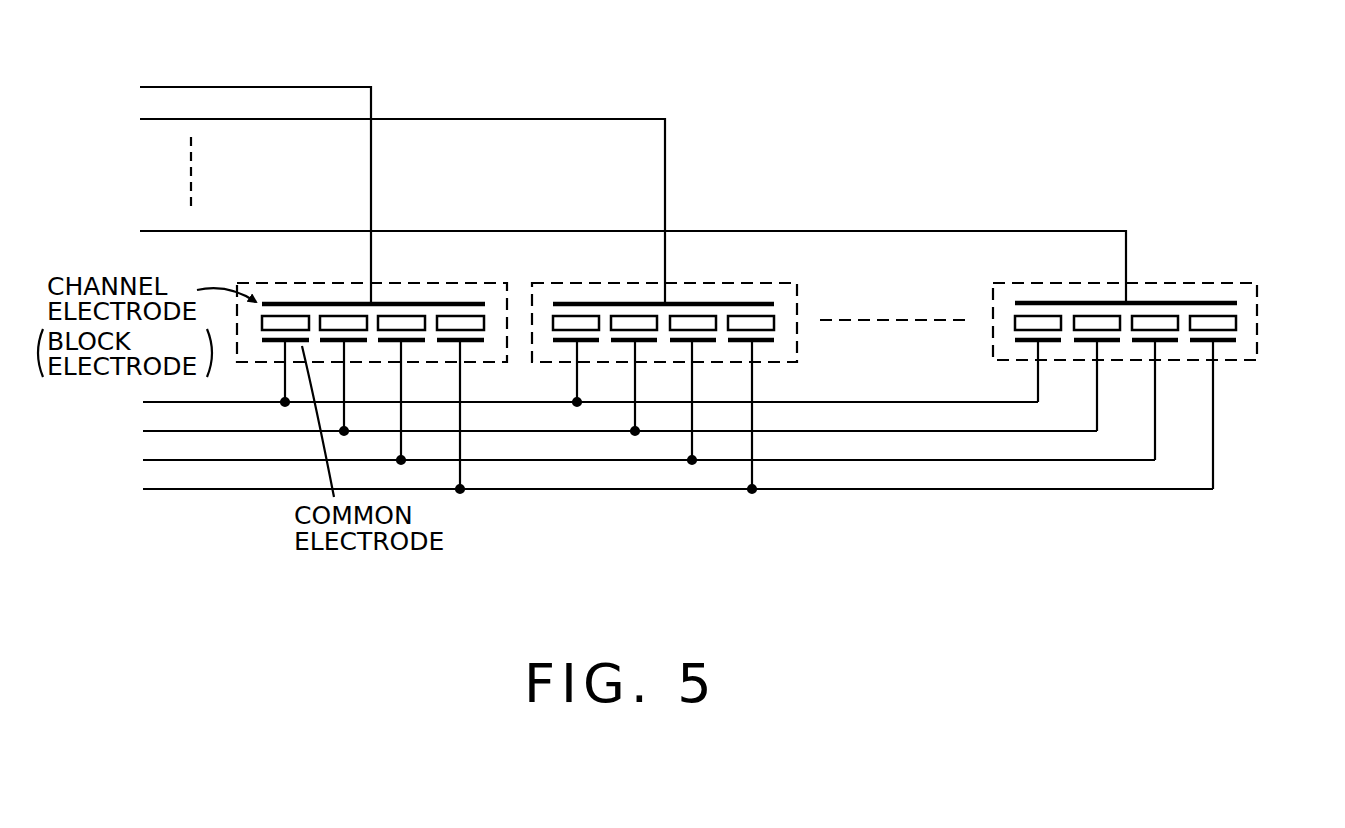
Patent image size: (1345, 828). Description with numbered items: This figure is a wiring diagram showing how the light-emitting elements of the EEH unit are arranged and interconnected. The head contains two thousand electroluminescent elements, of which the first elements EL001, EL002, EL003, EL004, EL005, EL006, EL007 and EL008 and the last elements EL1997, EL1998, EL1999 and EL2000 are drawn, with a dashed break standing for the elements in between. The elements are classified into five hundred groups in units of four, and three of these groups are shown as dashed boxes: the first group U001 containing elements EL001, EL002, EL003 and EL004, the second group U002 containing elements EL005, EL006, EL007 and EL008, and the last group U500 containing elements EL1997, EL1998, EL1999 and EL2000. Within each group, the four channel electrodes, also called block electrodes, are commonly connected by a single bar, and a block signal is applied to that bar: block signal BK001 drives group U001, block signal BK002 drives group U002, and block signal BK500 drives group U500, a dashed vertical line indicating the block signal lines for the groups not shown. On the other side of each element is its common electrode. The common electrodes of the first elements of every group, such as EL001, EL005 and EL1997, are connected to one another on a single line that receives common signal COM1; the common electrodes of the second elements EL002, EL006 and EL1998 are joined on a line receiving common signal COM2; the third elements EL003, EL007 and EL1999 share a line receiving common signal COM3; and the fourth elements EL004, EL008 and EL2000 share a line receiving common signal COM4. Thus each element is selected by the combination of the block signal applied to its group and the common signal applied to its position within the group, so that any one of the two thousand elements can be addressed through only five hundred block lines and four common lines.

The block signal BK001 is at (208, 188).
The block signal BK002 is at (355, 204).
The block signal BK500 is at (585, 260).
The EL element EL001 is at (281, 310).
The EL element EL002 is at (337, 310).
The EL element EL003 is at (401, 310).
The EL element EL004 is at (461, 310).
The EL element EL005 is at (565, 310).
The EL element EL006 is at (633, 310).
The EL element EL007 is at (690, 310).
The EL element EL008 is at (752, 310).
The EL element EL1997 is at (1033, 310).
The EL element EL1998 is at (1095, 310).
The EL element EL1999 is at (1152, 310).
The EL element EL2000 is at (1225, 310).
The EL group U001 is at (509, 345).
The EL group U002 is at (798, 338).
The EL group U500 is at (1262, 337).
The common signal COM1 is at (544, 401).
The common signal COM2 is at (573, 430).
The common signal COM3 is at (602, 459).
The common signal COM4 is at (631, 488).